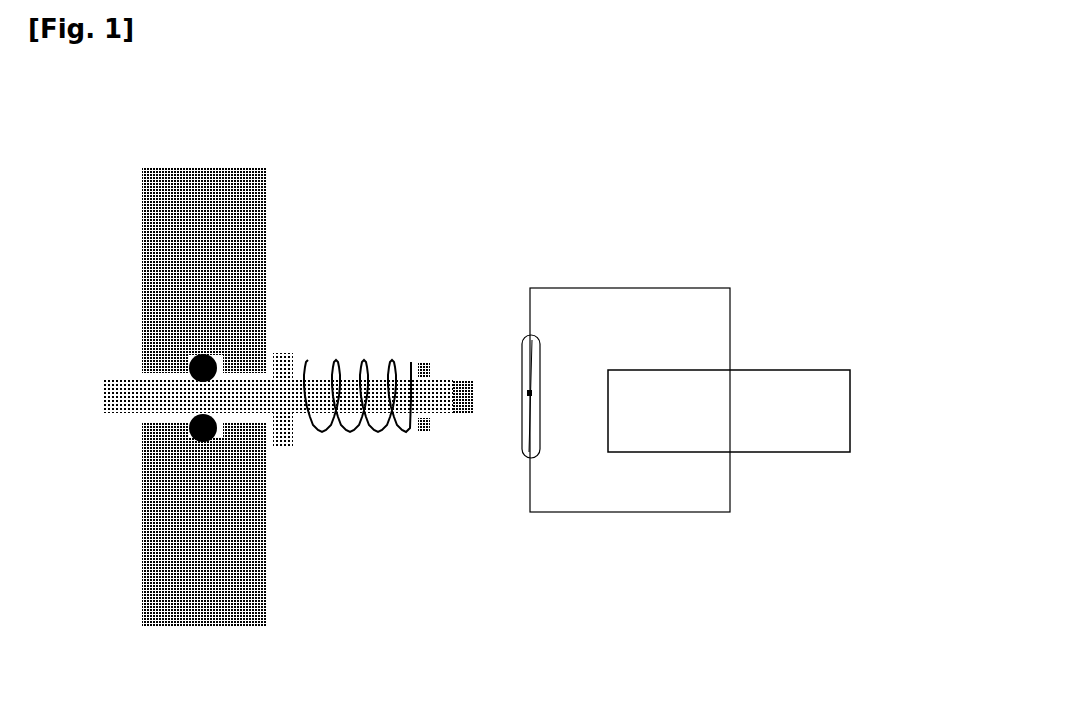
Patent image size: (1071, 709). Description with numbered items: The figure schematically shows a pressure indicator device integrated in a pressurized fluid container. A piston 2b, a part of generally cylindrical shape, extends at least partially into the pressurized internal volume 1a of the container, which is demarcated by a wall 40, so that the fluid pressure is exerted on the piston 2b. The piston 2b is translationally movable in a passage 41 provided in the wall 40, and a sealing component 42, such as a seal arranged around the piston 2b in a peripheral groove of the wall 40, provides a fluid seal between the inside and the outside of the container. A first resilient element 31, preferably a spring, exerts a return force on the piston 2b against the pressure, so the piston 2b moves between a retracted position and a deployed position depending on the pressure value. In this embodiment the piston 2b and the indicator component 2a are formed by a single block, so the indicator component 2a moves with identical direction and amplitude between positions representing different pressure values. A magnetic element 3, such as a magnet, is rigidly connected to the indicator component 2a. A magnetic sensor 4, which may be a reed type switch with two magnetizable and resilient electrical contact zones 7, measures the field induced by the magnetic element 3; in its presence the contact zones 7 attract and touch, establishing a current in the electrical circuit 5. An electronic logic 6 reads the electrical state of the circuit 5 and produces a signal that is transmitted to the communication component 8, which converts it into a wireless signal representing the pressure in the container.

The pressurized internal volume 1a is at (39, 377).
The wall 40 is at (221, 183).
The sealing component 42 is at (189, 345).
The passage 41 is at (246, 363).
The piston 2b is at (142, 410).
The indicator component 2a is at (444, 383).
The first resilient element 31 is at (356, 442).
The magnetic element 3 is at (461, 426).
The electrical circuit 5 is at (678, 280).
The sensor 4 is at (548, 479).
The electrical contact zones 7 is at (526, 418).
The electronic logic 6 is at (729, 411).
The communication component 8 is at (740, 426).